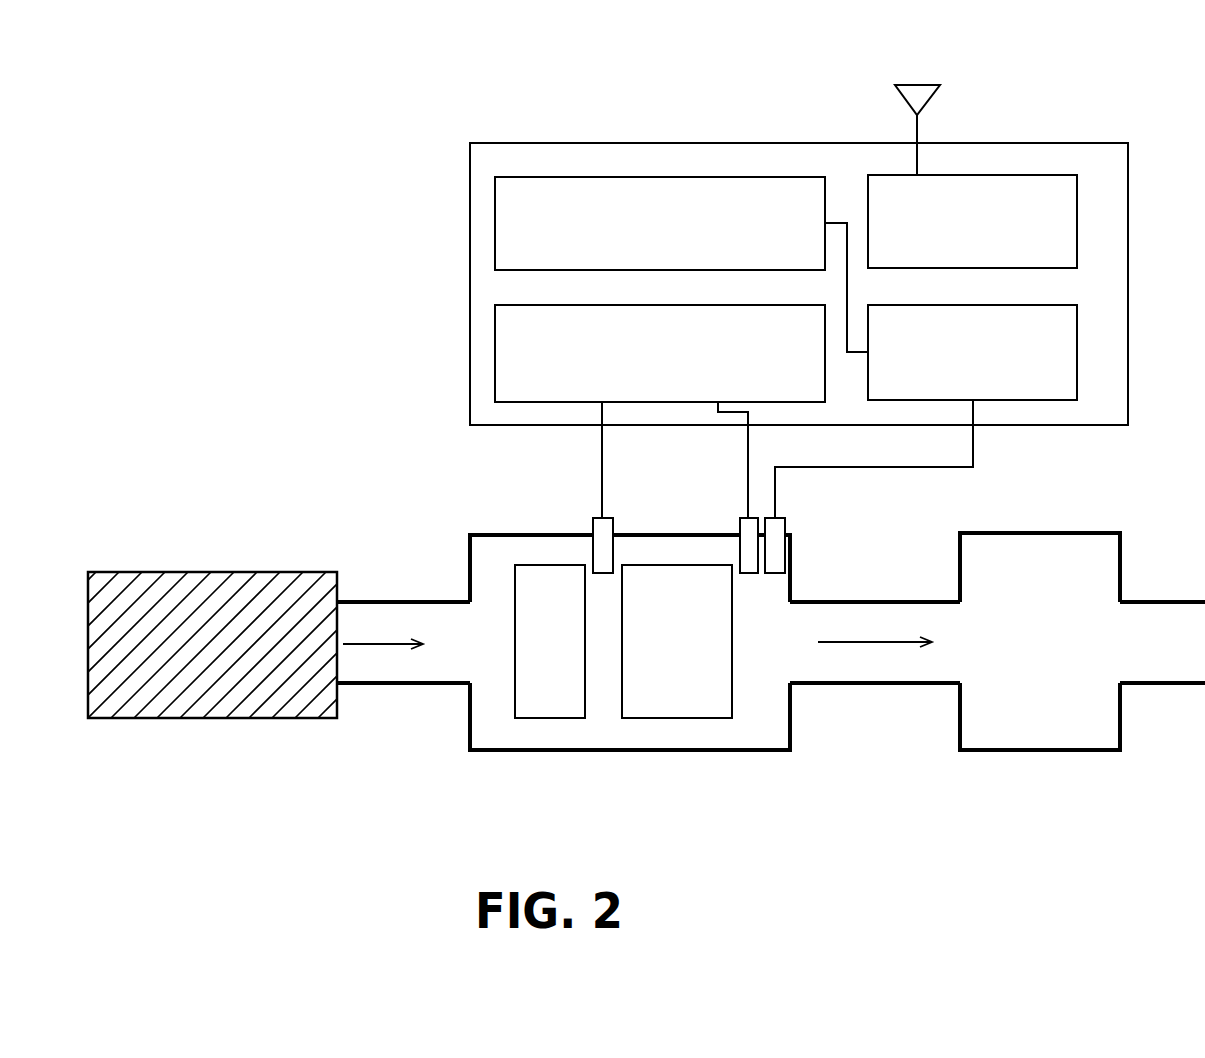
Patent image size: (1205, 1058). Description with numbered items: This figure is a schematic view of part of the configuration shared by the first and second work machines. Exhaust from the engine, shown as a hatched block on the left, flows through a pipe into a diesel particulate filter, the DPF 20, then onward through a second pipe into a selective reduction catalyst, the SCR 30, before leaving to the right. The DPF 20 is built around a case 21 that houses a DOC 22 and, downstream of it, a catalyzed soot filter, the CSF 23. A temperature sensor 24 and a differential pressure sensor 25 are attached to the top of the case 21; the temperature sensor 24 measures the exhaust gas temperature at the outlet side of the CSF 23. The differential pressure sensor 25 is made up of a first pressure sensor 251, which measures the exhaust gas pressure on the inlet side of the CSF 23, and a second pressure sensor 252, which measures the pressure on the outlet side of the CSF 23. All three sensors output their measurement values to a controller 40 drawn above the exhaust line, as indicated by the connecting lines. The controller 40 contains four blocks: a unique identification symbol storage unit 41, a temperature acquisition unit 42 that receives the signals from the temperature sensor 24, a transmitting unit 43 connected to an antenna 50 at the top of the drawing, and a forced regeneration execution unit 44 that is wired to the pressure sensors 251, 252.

The diesel particulate filter 20 is at (598, 697).
The case 21 is at (750, 750).
The DOC 22 is at (548, 720).
The catalyzed soot filter 23 is at (677, 720).
The temperature sensor 24 is at (785, 525).
The differential pressure sensor 25 is at (675, 487).
The first pressure sensor 251 is at (613, 530).
The second pressure sensor 252 is at (720, 487).
The selective reduction catalyst 30 is at (975, 784).
The controller 40 is at (1080, 143).
The unique identification symbol storage unit 41 is at (657, 177).
The temperature acquisition unit 42 is at (1077, 352).
The transmitting unit 43 is at (1077, 221).
The forced regeneration execution unit 44 is at (657, 305).
The antenna 50 is at (925, 84).